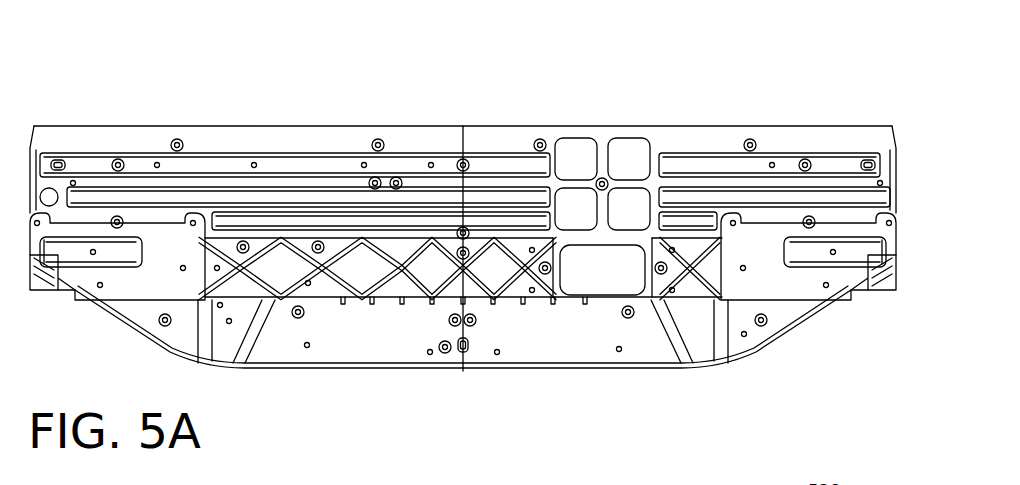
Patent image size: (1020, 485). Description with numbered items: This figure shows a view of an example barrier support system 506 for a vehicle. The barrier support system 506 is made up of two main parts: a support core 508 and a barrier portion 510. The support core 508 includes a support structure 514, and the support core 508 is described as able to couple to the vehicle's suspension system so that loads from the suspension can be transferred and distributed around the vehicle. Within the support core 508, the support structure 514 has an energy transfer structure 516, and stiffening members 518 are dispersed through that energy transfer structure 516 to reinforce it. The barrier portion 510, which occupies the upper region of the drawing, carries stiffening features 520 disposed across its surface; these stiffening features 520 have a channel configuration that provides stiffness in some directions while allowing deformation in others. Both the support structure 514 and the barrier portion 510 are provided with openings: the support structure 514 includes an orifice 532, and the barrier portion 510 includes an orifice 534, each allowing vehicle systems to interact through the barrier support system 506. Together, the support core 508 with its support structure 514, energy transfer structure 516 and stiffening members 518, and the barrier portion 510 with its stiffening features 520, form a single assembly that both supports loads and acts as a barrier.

The barrier support system 506 is at (463, 244).
The support core 508 is at (373, 327).
The barrier portion 510 is at (487, 133).
The support structure 514 is at (392, 313).
The energy transfer structure 516 is at (325, 303).
The stiffening members 518 is at (386, 272).
The stiffening features 520 is at (205, 163).
The orifice 532 is at (600, 268).
The orifice 534 is at (627, 152).